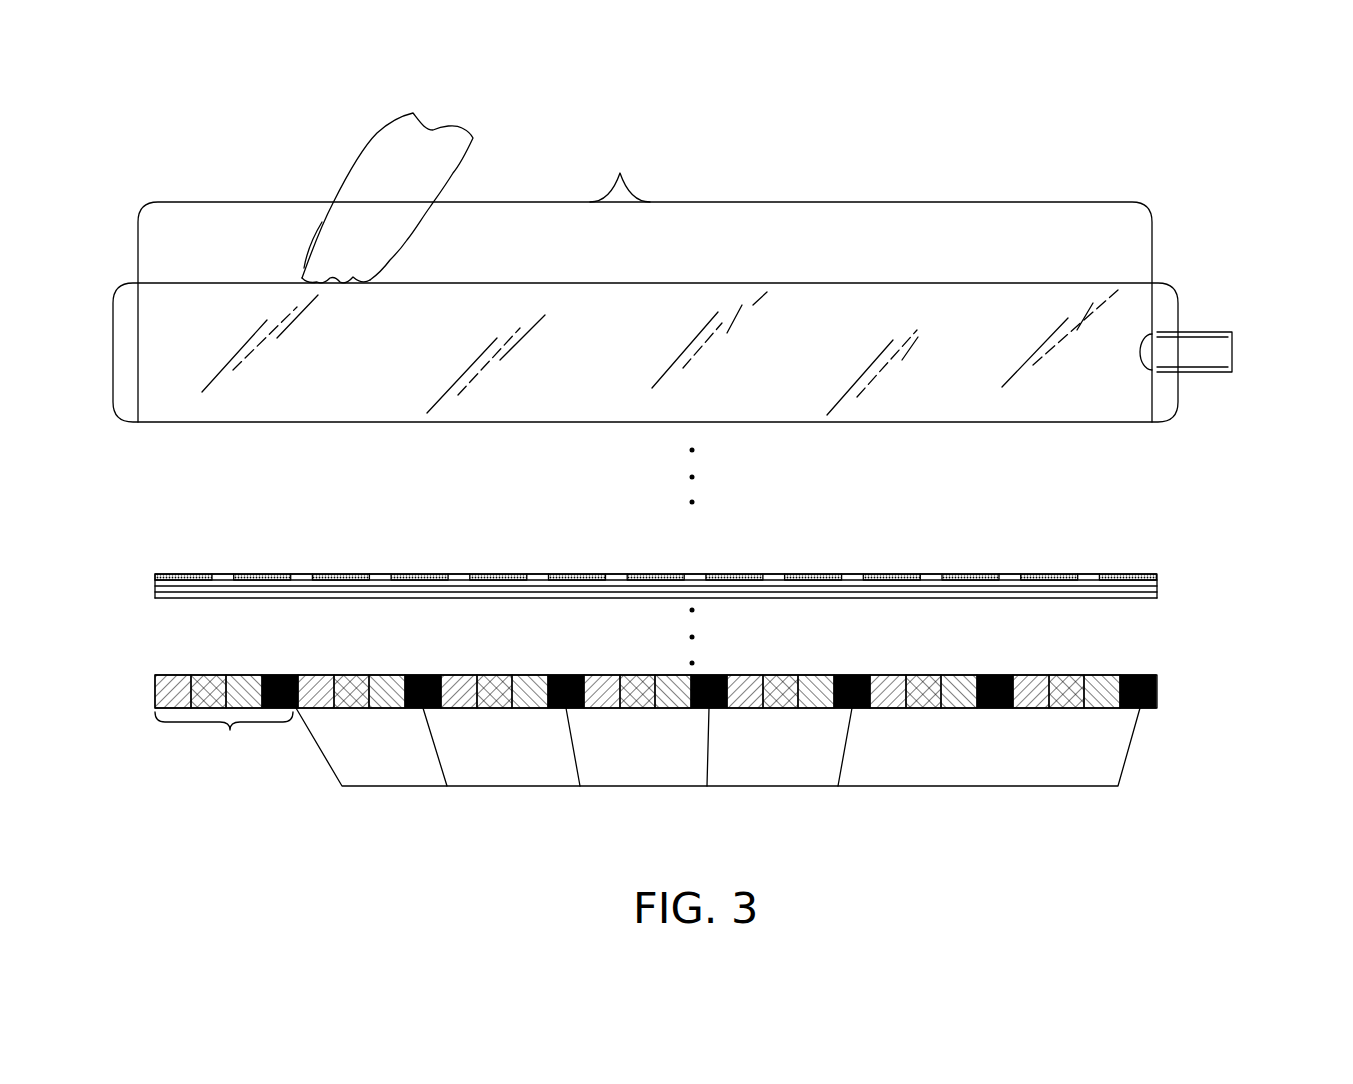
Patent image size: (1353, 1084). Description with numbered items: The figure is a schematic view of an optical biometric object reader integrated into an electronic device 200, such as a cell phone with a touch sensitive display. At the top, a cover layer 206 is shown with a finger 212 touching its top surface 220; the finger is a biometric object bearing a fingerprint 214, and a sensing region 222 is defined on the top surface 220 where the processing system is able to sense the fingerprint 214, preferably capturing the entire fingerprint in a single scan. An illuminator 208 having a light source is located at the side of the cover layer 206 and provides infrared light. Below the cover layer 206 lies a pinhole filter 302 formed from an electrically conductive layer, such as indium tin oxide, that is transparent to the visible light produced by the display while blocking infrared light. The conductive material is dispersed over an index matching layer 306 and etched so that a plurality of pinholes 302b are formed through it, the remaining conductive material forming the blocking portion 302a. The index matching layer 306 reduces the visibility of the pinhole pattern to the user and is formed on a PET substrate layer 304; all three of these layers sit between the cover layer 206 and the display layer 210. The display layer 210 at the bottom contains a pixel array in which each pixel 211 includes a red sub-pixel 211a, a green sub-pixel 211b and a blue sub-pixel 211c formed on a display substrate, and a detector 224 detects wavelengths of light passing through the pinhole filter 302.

The electronic device 200 is at (1082, 165).
The cover layer 206 is at (620, 307).
The illuminator 208 is at (1197, 330).
The display layer 210 is at (468, 807).
The pixel 211 is at (224, 715).
The red sub-pixel 211a is at (1145, 708).
The green sub-pixel 211b is at (1068, 708).
The blue sub-pixel 211c is at (1103, 708).
The finger 212 is at (367, 158).
The fingerprint 214 is at (320, 290).
The top surface 220 is at (952, 283).
The sensing region 222 is at (620, 170).
The detector 224 is at (660, 786).
The pinhole filter 302 is at (1150, 574).
The blocking portion 302a is at (180, 574).
The pinholes 302b is at (302, 574).
The PET substrate layer 304 is at (1160, 593).
The index matching layer 306 is at (1160, 583).